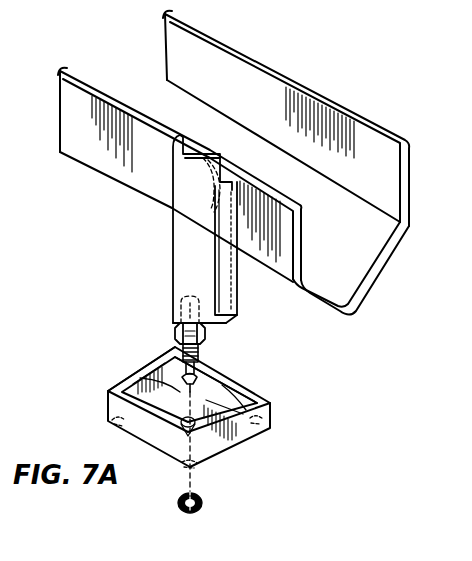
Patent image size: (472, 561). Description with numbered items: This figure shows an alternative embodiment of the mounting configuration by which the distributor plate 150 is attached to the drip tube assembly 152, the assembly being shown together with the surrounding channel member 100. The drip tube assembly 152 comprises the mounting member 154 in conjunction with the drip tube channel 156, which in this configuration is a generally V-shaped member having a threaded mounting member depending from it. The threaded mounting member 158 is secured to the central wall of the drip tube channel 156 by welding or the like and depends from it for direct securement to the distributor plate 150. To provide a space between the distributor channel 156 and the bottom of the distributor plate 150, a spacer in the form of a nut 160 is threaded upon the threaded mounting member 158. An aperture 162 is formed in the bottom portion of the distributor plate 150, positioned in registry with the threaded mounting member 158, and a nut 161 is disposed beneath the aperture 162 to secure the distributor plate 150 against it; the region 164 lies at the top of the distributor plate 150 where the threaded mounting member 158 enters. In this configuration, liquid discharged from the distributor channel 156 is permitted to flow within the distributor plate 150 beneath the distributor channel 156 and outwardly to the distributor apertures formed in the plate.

The channel member 100 is at (166, 161).
The distributor plate 150 is at (272, 410).
The drip tube assembly 152 is at (238, 314).
The mounting member 154 is at (228, 293).
The drip tube channel 156 is at (183, 248).
The threaded mounting member 158 is at (199, 351).
The nut 160 is at (178, 330).
The nut 161 is at (203, 503).
The aperture 162 is at (226, 379).
The base recess edge 164 is at (172, 356).